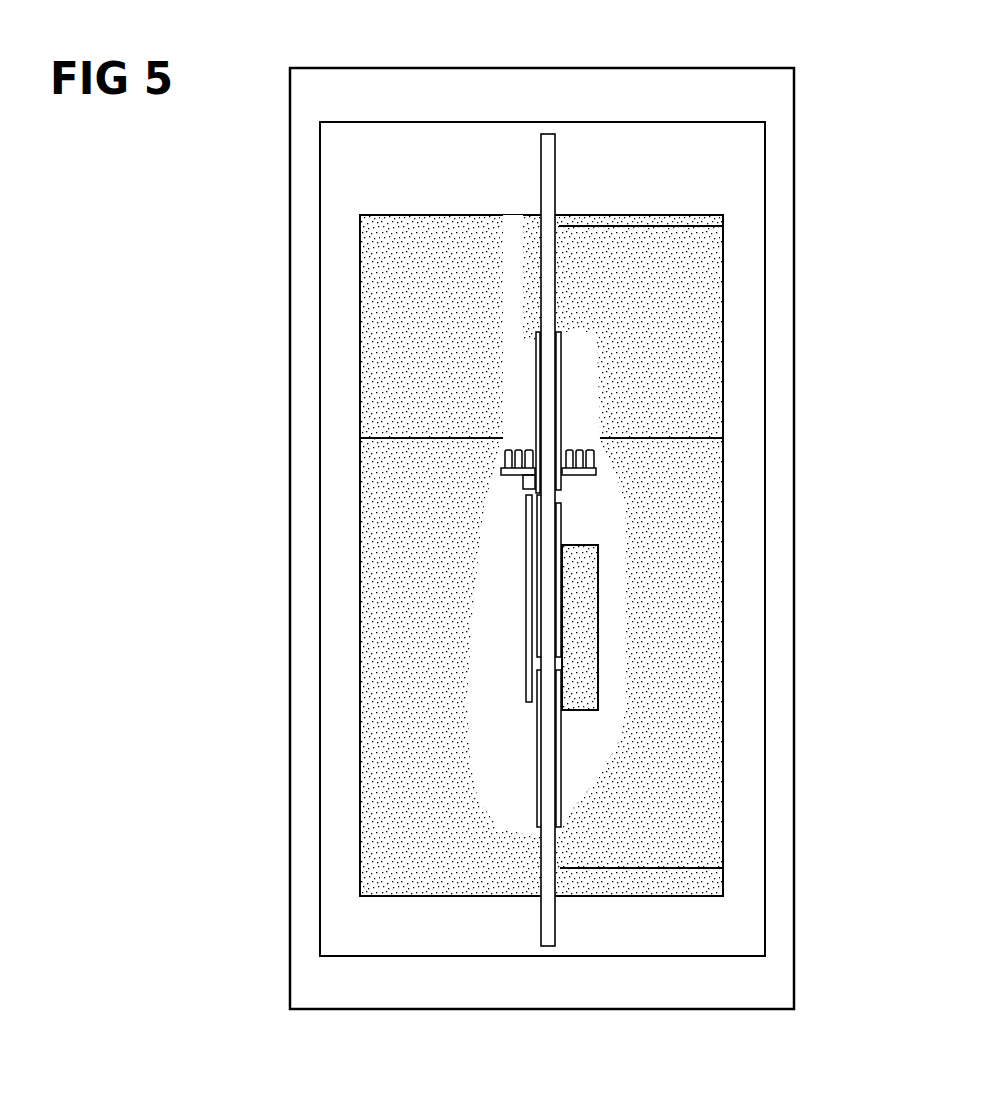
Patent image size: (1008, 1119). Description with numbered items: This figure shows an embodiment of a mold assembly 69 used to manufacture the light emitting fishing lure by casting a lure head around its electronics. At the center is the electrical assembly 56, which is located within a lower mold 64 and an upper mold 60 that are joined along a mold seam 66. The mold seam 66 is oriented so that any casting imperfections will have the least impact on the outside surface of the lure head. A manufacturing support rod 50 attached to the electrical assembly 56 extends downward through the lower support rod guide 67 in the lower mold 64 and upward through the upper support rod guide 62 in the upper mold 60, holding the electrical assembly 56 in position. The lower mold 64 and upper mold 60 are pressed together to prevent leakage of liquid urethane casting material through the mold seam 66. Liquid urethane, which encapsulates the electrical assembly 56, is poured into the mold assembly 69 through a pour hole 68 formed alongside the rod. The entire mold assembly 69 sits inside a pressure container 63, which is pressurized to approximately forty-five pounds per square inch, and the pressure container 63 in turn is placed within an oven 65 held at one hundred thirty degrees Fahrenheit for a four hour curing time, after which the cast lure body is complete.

The manufacturing support rod 50 is at (555, 171).
The electrical assembly 56 is at (562, 507).
The upper mold 60 is at (722, 354).
The upper support rod guide 62 is at (723, 226).
The pressure container 63 is at (318, 405).
The lower mold 64 is at (722, 742).
The oven 65 is at (290, 643).
The mold seam 66 is at (722, 440).
The lower support rod guide 67 is at (723, 868).
The pour hole 68 is at (503, 262).
The mold assembly 69 is at (723, 138).